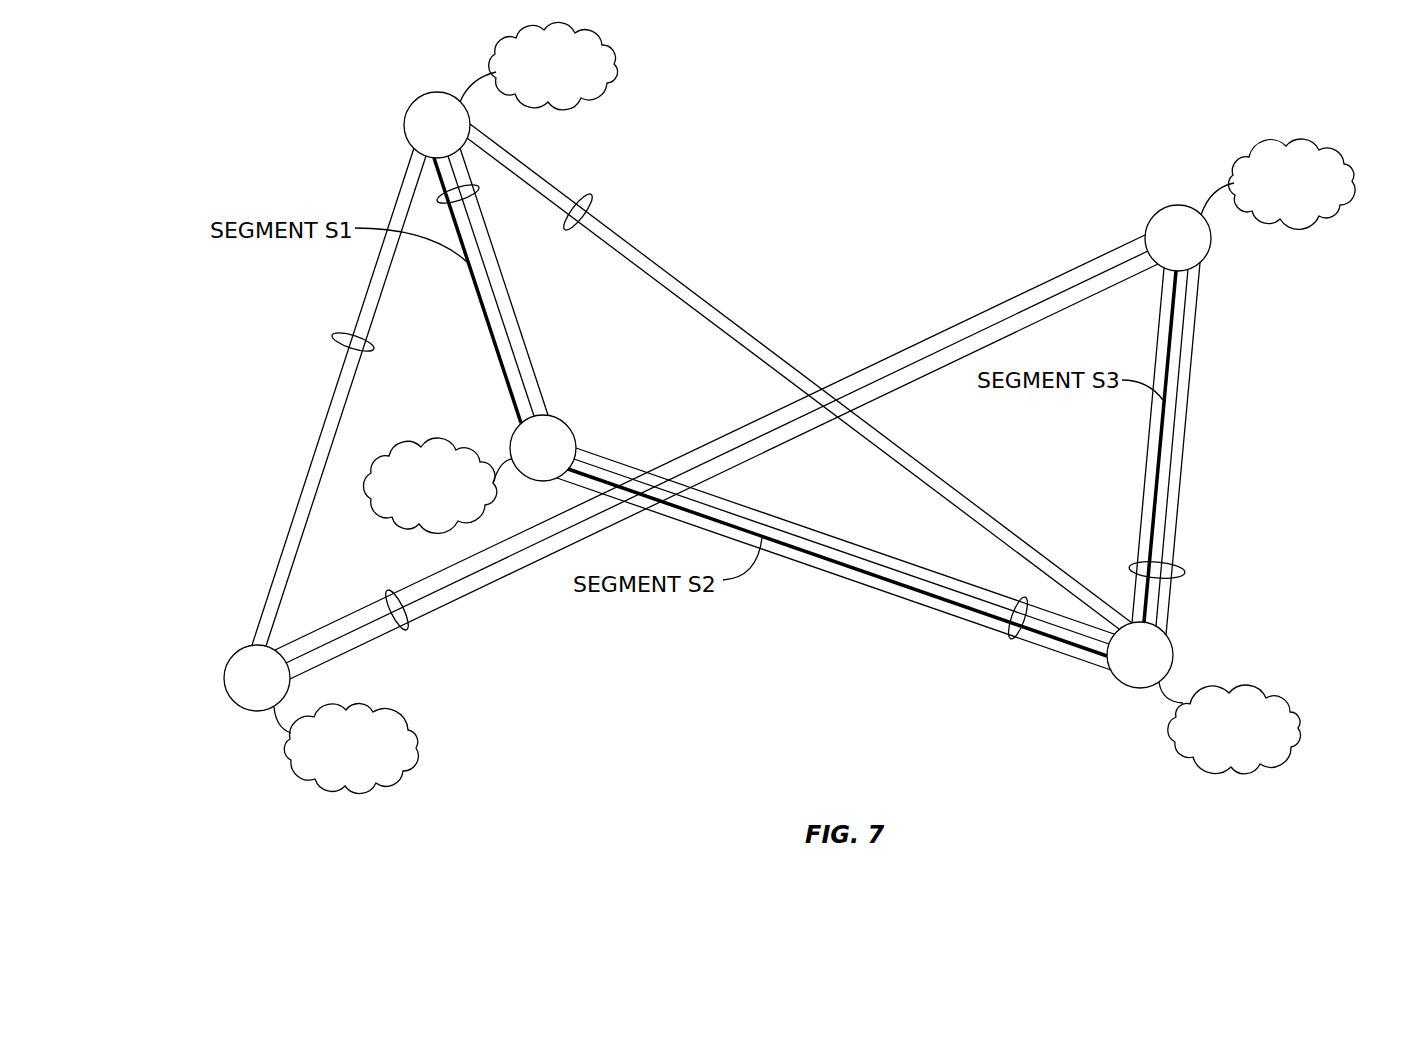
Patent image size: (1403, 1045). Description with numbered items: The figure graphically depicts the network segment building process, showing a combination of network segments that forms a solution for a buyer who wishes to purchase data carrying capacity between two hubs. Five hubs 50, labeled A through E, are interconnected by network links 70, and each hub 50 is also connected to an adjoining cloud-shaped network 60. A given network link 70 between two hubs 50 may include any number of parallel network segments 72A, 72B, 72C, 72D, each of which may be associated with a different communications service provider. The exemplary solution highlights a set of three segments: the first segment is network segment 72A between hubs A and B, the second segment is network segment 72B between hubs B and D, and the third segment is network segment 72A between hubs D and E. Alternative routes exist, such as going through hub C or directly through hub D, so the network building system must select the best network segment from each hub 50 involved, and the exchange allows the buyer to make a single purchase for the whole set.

The hub 50 is at (420, 97).
The client network 60 is at (612, 54).
The network link 70 is at (483, 192).
The network segment 72A is at (482, 303).
The network segment 72B is at (500, 311).
The network segment 72C is at (522, 333).
The network segment 72D is at (893, 558).